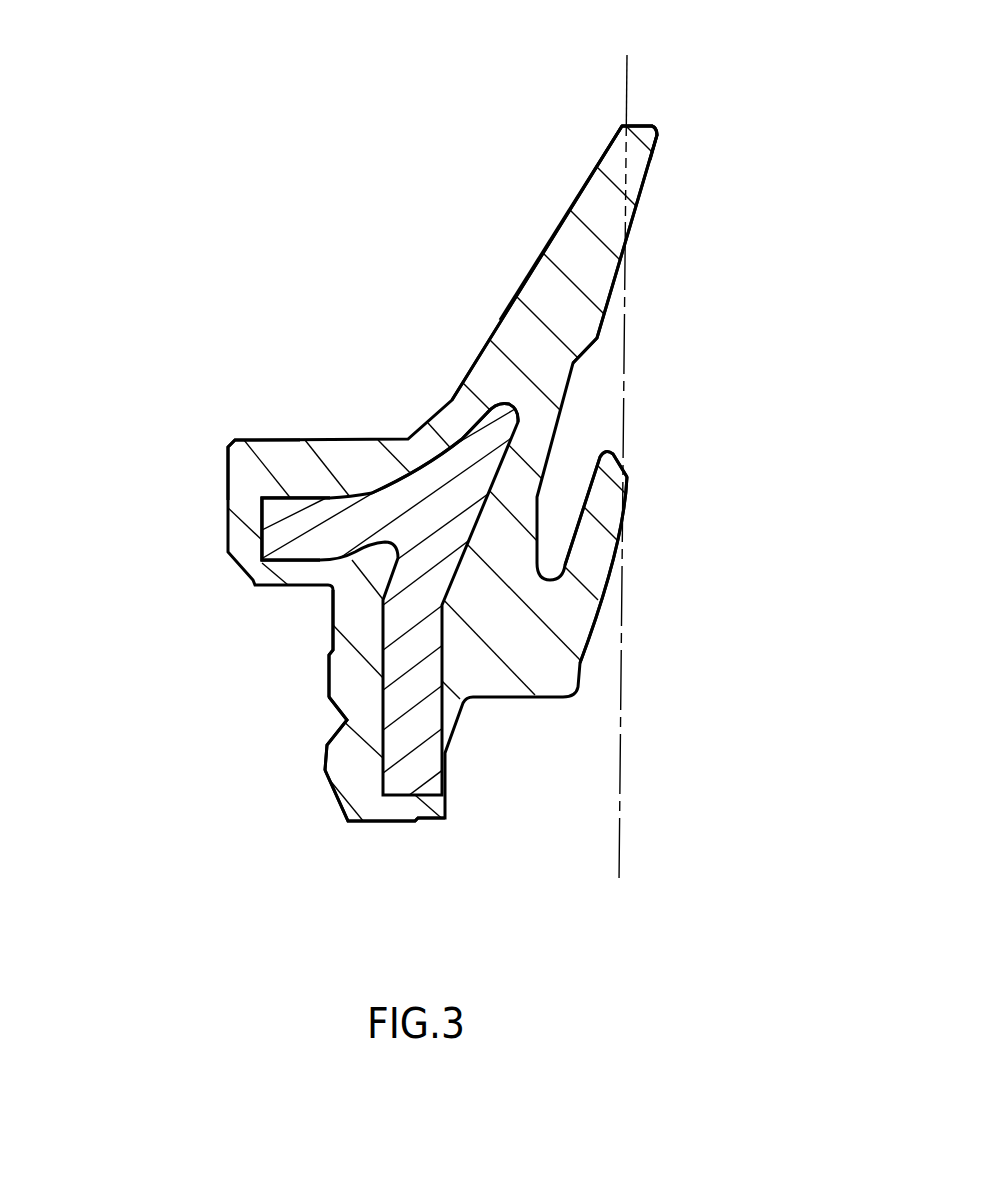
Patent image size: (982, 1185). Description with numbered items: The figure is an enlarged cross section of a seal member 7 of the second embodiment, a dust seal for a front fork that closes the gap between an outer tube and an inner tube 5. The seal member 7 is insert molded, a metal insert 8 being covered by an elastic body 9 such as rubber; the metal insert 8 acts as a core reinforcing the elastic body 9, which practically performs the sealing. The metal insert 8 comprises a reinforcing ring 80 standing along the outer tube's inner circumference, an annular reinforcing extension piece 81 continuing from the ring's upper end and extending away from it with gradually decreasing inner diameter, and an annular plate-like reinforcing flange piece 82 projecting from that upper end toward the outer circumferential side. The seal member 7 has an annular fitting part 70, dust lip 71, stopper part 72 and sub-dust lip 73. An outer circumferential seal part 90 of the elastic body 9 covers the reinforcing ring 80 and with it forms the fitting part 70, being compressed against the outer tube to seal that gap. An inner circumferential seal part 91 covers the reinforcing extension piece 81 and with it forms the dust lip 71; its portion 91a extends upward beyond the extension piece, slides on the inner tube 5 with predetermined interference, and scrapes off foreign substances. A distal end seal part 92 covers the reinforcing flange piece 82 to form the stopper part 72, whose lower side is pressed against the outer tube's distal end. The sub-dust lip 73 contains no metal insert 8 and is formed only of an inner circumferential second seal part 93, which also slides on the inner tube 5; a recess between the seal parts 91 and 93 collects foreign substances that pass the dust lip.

The inner tube 5 is at (627, 85).
The seal member 7 is at (518, 483).
The metal insert 8 is at (357, 559).
The elastic body 9 is at (518, 483).
The fitting part 70 is at (328, 785).
The dust lip 71 is at (575, 193).
The stopper part 72 is at (228, 460).
The sub-dust lip 73 is at (629, 487).
The reinforcing ring 80 is at (393, 712).
The reinforcing extension piece 81 is at (462, 398).
The reinforcing flange piece 82 is at (302, 545).
The outer circumferential seal part 90 is at (340, 655).
The inner circumferential seal part 91 is at (543, 273).
The portion of the inner circumferential seal part 91a is at (654, 164).
The distal end seal part 92 is at (243, 504).
The inner circumferential second seal part 93 is at (600, 530).